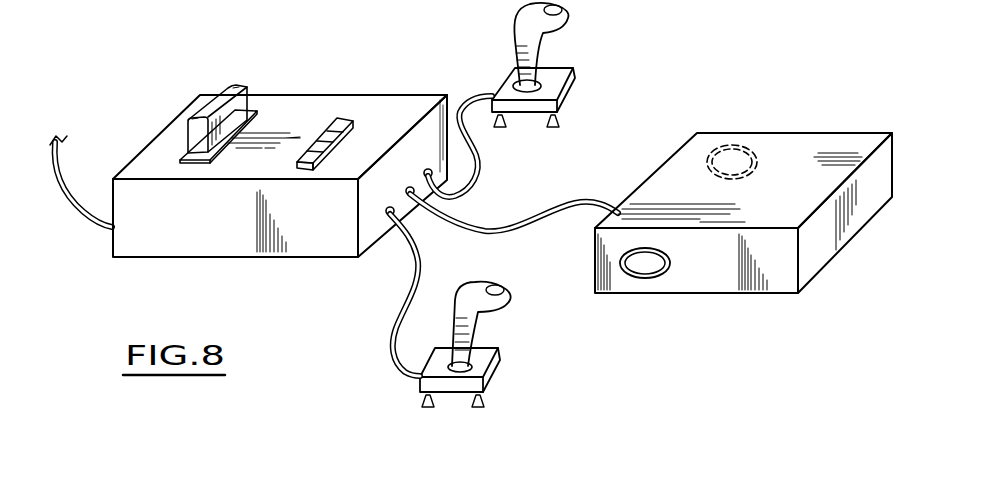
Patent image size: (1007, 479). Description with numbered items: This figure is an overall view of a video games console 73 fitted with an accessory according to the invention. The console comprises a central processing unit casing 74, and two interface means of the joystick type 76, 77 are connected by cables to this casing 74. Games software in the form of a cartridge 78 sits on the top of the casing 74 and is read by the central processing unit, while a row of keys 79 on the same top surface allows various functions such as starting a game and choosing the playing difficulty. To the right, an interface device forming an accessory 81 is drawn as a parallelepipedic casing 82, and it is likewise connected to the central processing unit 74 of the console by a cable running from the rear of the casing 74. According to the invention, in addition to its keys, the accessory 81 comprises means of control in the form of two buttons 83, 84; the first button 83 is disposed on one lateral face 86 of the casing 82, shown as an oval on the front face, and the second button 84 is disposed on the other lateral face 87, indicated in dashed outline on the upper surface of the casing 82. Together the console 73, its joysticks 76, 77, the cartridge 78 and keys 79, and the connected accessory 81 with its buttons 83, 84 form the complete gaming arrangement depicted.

The video games console 73 is at (177, 93).
The central processing unit casing 74 is at (238, 230).
The joystick-type interface means 76 is at (573, 88).
The joystick-type interface means 77 is at (497, 370).
The cartridge 78 is at (238, 87).
The keys 79 is at (330, 130).
The accessory 81 is at (829, 297).
The parallelepipedic casing 82 is at (885, 132).
The button 83 is at (648, 267).
The button 84 is at (737, 160).
The lateral face 86 is at (780, 265).
The lateral face 87 is at (828, 160).